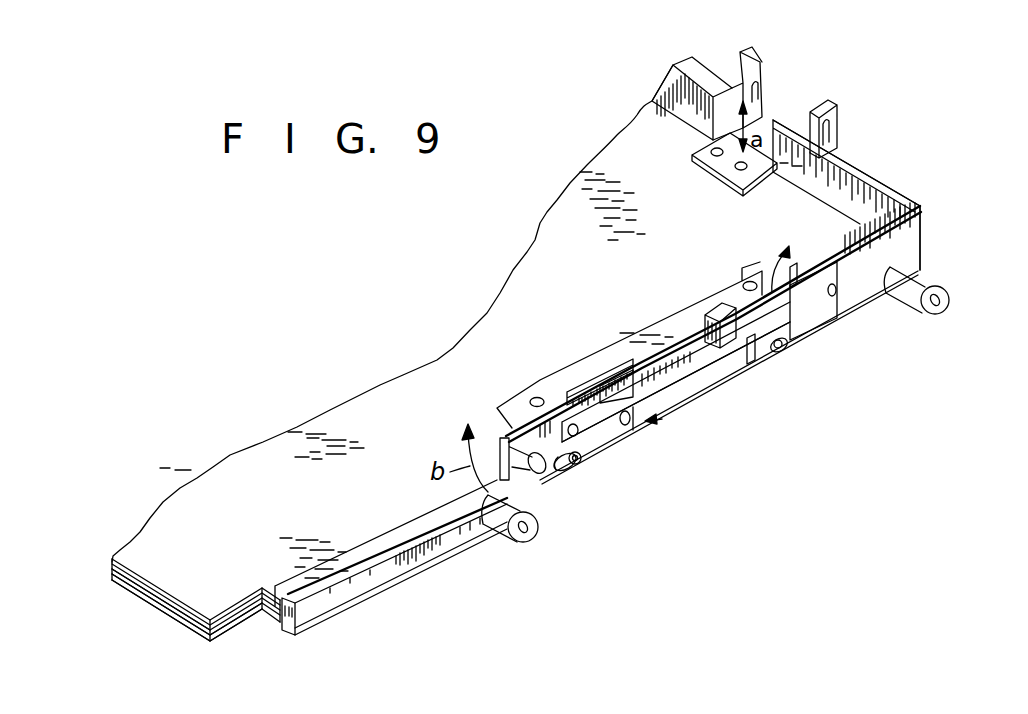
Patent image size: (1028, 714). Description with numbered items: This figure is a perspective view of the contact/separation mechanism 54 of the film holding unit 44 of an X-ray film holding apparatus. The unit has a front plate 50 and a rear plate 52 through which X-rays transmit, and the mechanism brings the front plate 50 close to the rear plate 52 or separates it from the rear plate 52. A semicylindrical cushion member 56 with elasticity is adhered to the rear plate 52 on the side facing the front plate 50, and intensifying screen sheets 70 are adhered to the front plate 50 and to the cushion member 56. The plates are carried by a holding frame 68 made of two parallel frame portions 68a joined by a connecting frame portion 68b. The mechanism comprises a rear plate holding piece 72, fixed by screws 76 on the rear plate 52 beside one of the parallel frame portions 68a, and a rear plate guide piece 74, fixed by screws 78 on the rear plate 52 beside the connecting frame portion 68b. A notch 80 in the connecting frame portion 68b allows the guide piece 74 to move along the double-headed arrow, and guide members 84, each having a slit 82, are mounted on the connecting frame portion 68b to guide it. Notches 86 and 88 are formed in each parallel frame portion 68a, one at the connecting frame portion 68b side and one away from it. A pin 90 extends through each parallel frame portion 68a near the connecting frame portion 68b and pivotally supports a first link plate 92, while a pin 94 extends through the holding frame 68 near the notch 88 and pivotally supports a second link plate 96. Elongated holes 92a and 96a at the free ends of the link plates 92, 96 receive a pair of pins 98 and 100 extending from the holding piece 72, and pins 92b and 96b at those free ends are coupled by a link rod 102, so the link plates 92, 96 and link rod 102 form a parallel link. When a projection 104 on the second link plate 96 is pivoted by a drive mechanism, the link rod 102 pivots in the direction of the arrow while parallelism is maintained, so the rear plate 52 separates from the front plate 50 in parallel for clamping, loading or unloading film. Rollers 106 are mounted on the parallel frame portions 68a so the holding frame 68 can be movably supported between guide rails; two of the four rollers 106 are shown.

The film holding unit 44 is at (403, 567).
The front plate 50 is at (223, 627).
The rear plate 52 is at (160, 572).
The contact/separation mechanism 54 is at (666, 426).
The semicylindrical cushion member 56 is at (185, 593).
The holding frame 68 is at (957, 190).
The parallel frame portions 68a is at (890, 302).
The connecting frame portion 68b is at (858, 164).
The intensifying screen sheets 70 is at (190, 626).
The rear plate holding piece 72 is at (620, 352).
The rear plate guide piece 74 is at (725, 172).
The screws 76 is at (533, 400).
The screws 78 is at (710, 156).
The notch 80 is at (718, 76).
The slit 82 is at (762, 92).
The guide members 84 is at (758, 62).
The notch 86 is at (795, 265).
The notch 88 is at (568, 392).
The pin 90 is at (840, 292).
The first link plate 92 is at (816, 330).
The elongated hole 92a is at (778, 355).
The pin 92b is at (814, 301).
The pin 94 is at (627, 424).
The second link plate 96 is at (600, 445).
The elongated hole 96a is at (572, 475).
The pin 96b is at (580, 456).
The pin 98 is at (790, 350).
The pin 100 is at (580, 466).
The link rod 102 is at (693, 368).
The projection 104 is at (513, 447).
The rollers 106 is at (518, 535).